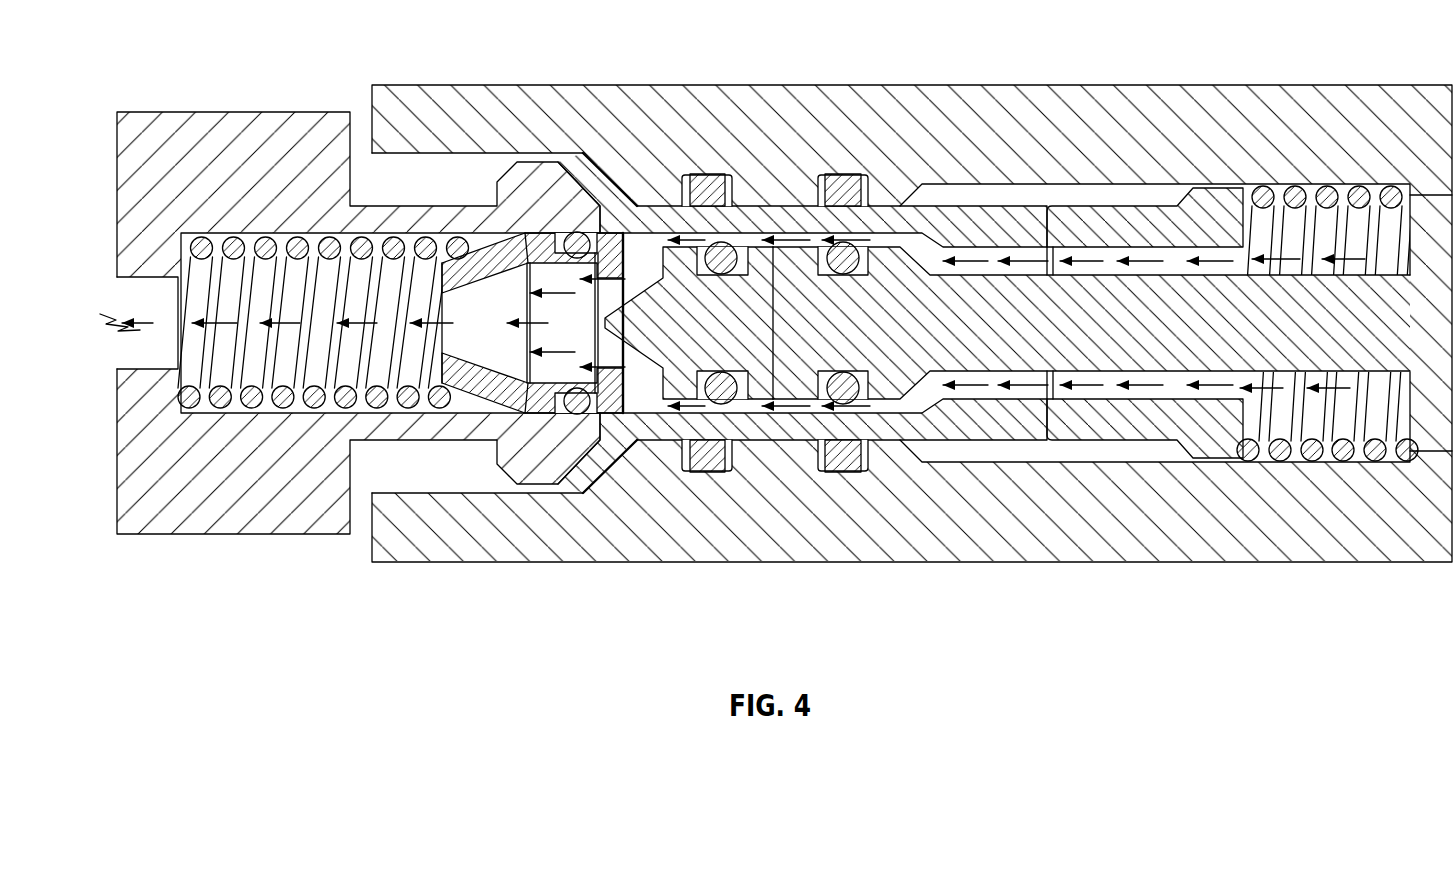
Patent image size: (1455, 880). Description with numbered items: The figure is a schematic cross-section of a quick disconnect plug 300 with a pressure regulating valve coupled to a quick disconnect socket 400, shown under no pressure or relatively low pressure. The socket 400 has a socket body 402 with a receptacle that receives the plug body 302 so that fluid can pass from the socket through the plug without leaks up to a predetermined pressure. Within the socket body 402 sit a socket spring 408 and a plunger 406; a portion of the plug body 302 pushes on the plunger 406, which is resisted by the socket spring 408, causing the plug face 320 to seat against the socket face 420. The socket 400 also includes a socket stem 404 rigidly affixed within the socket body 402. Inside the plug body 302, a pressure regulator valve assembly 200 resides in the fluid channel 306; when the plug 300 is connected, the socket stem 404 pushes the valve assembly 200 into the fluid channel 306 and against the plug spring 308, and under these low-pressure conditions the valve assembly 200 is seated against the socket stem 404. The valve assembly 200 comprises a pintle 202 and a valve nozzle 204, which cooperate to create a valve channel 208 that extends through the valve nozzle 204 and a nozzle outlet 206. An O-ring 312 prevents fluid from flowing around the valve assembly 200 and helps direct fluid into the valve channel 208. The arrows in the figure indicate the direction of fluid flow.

The pressure regulator valve assembly 200 is at (541, 420).
The pintle 202 is at (704, 340).
The valve nozzle 204 is at (522, 248).
The nozzle outlet 206 is at (434, 292).
The valve channel 208 is at (637, 273).
The quick disconnect plug 300 is at (158, 90).
The plug body 302 is at (1032, 220).
The fluid channel 306 is at (342, 292).
The plug spring 308 is at (250, 402).
The O-ring 312 is at (581, 236).
The plug face 320 is at (792, 360).
The quick disconnect socket 400 is at (1272, 567).
The socket body 402 is at (1326, 78).
The socket stem 404 is at (880, 255).
The plunger 406 is at (1150, 220).
The socket spring 408 is at (1363, 197).
The socket face 420 is at (773, 318).